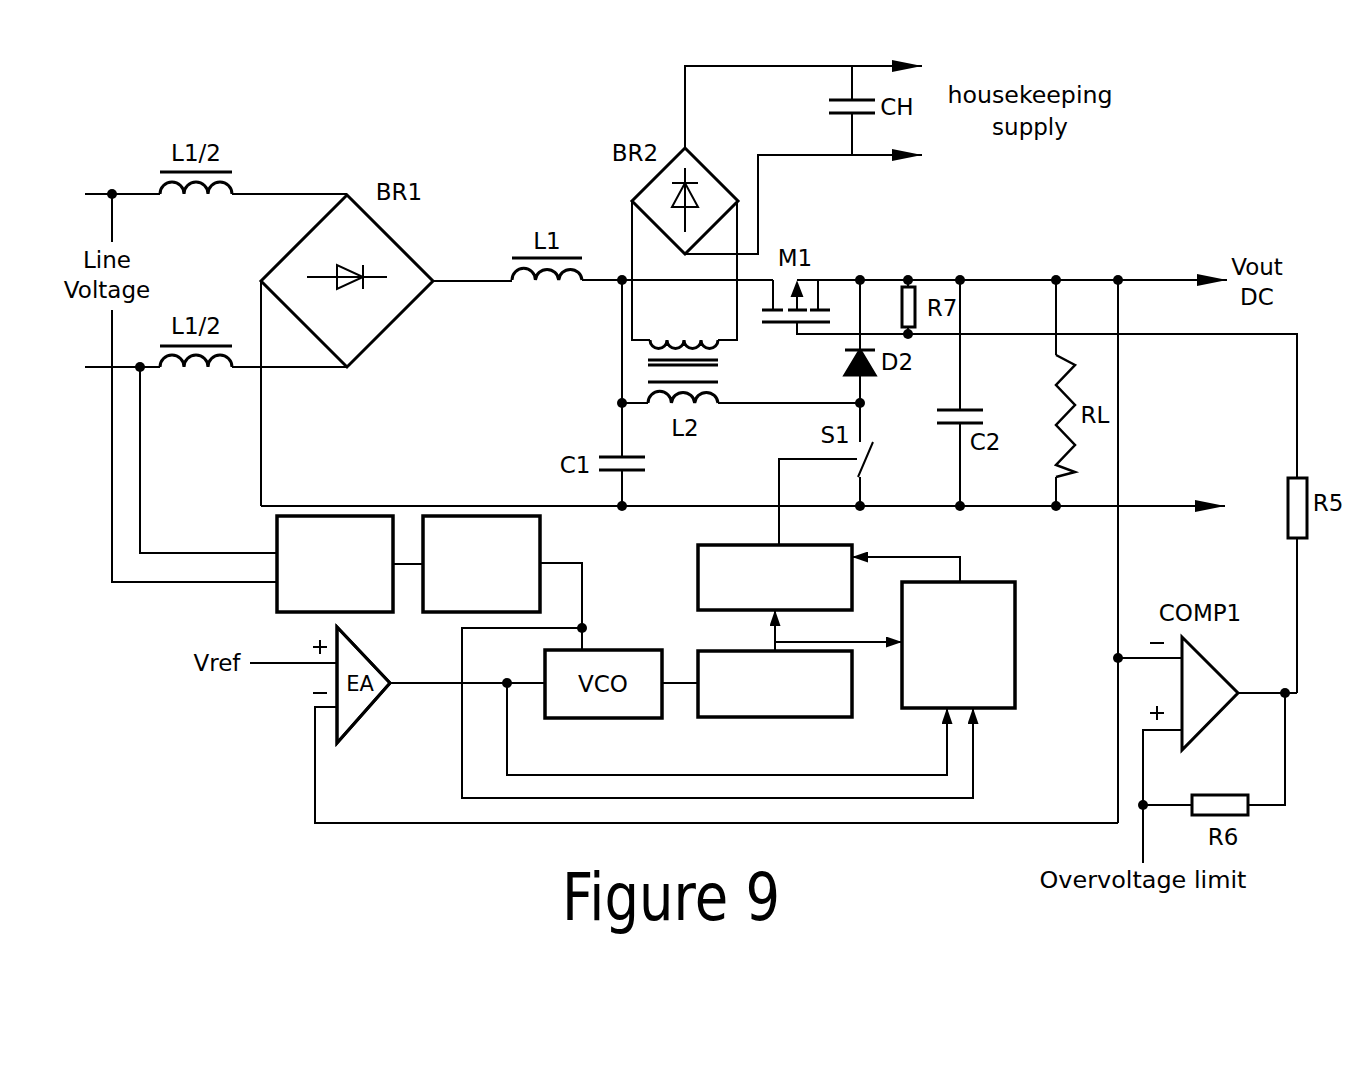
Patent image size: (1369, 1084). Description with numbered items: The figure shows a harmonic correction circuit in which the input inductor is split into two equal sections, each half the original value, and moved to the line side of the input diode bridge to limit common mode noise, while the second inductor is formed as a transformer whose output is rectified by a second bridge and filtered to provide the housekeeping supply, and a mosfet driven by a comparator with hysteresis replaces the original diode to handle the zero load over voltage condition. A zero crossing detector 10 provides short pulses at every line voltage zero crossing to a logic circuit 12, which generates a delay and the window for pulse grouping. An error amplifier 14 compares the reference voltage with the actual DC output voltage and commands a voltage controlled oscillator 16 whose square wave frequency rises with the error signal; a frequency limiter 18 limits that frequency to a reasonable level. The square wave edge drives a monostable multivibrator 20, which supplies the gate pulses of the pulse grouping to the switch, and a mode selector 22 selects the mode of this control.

The zero crossing detector 10 is at (277, 605).
The logic circuit 12 is at (540, 533).
The error amplifier 14 is at (352, 708).
The VCO 16 is at (640, 658).
The frequency limiter 18 is at (840, 705).
The monostable multivibrator 20 is at (698, 555).
The mode selector 22 is at (1017, 603).